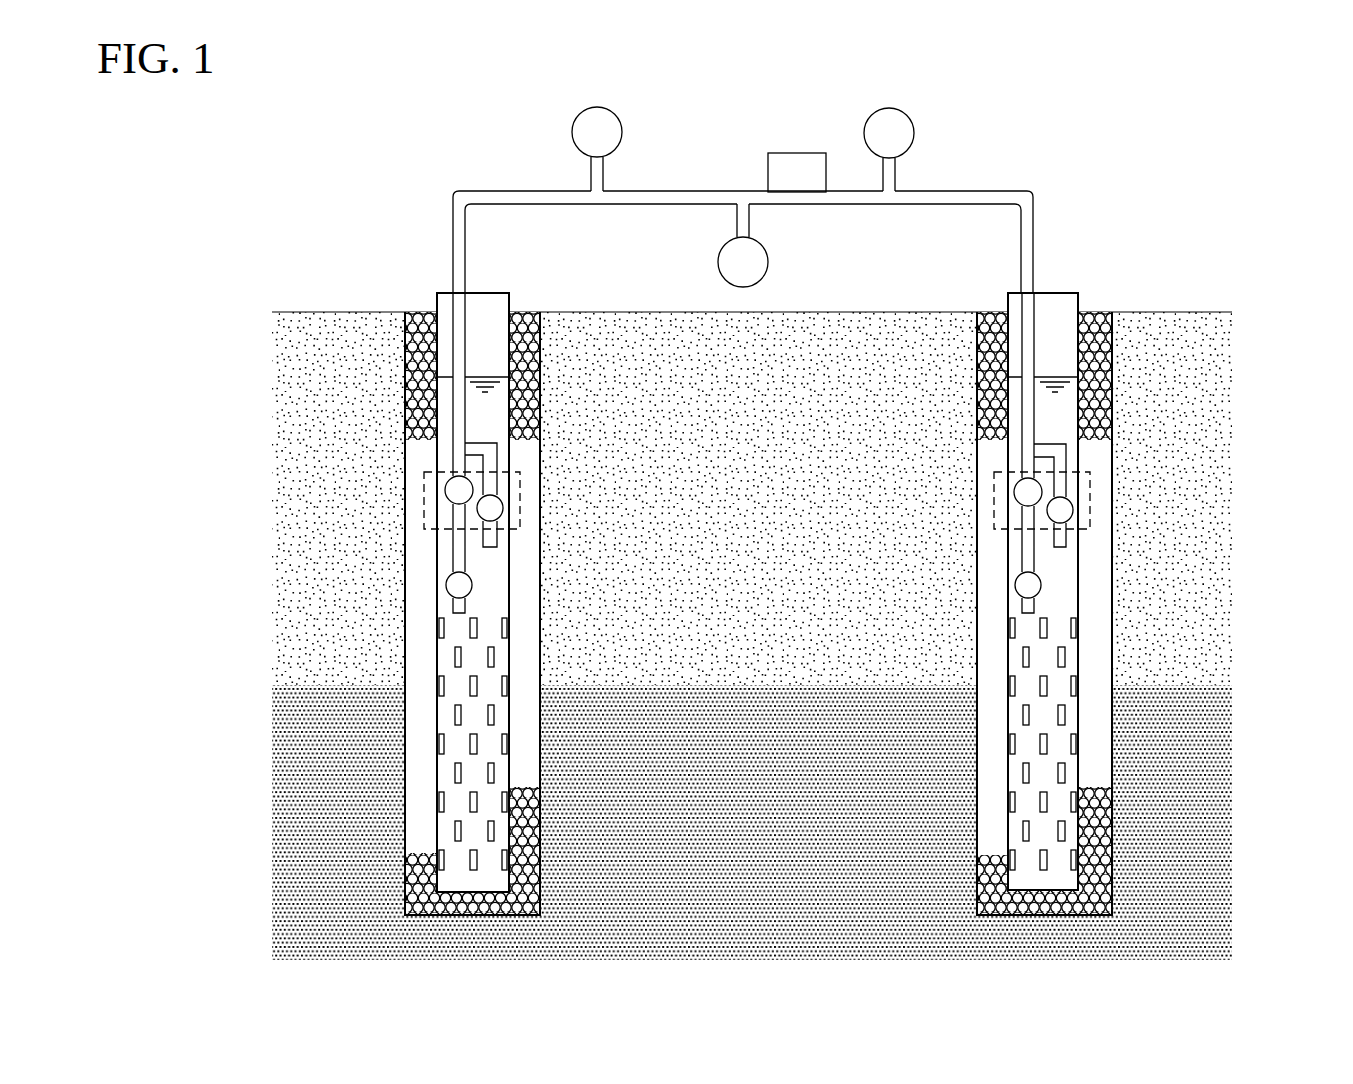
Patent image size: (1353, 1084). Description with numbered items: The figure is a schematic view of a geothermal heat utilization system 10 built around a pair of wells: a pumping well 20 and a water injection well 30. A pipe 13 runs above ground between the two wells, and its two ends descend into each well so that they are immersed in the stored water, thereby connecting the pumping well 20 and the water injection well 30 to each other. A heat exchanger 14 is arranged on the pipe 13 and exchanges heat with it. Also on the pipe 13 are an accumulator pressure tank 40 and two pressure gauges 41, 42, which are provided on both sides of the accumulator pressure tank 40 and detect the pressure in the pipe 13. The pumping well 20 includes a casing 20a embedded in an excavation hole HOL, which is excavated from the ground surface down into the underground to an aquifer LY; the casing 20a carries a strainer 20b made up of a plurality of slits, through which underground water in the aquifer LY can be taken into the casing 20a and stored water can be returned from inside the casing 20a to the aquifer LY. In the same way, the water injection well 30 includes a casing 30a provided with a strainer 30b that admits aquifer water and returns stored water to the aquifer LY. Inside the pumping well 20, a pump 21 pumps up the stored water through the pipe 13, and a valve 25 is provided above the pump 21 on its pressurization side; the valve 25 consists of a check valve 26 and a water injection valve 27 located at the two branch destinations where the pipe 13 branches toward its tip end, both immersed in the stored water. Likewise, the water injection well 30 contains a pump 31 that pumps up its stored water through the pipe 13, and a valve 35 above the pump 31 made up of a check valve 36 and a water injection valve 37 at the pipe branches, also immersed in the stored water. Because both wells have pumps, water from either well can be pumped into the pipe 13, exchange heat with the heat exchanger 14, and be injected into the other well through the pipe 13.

The geothermal heat utilization system 10 is at (430, 173).
The pipe 13 is at (976, 191).
The heat exchanger 14 is at (799, 153).
The pumping well 20 is at (437, 296).
The casing 20a is at (437, 729).
The strainer 20b is at (455, 830).
The pump 21 is at (445, 590).
The valve 25 is at (424, 474).
The check valve 26 is at (445, 494).
The water injection valve 27 is at (503, 510).
The water injection well 30 is at (1079, 296).
The casing 30a is at (1078, 712).
The strainer 30b is at (1063, 830).
The pump 31 is at (1041, 595).
The valve 35 is at (1090, 482).
The check valve 36 is at (1014, 492).
The water injection valve 37 is at (1073, 513).
The accumulator pressure tank 40 is at (768, 257).
The pressure gauge 41 is at (597, 107).
The pressure gauge 42 is at (889, 108).
The excavation hole HOL is at (405, 447).
The aquifer LY is at (1213, 786).